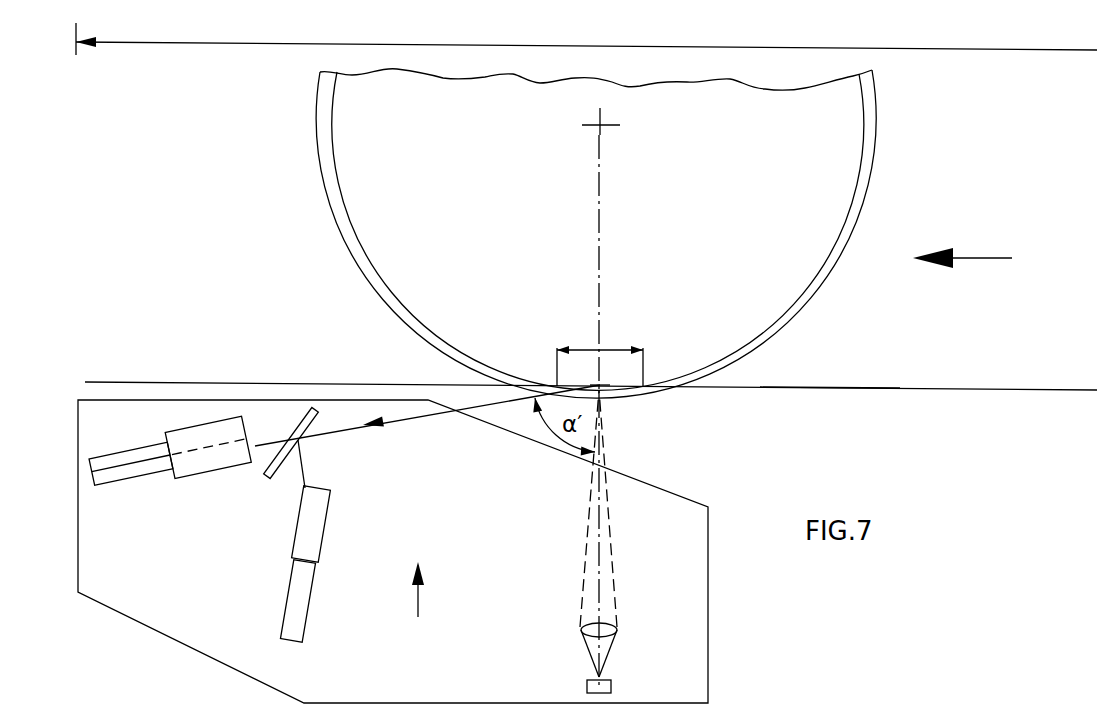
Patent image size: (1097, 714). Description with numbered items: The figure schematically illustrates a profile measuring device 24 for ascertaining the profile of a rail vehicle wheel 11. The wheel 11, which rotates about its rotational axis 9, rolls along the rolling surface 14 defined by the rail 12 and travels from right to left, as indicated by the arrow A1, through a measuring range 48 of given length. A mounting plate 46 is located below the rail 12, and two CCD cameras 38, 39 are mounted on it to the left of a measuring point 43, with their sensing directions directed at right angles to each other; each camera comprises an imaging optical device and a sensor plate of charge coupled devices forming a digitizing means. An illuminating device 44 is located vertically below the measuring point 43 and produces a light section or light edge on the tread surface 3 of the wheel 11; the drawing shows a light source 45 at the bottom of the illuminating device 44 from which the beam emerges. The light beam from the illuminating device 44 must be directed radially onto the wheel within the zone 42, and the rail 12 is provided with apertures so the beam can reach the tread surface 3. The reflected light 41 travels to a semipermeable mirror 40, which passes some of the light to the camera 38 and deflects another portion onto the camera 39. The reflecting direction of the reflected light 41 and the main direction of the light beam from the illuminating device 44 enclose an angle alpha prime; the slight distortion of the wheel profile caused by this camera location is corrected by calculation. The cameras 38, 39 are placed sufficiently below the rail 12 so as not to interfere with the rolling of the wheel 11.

The tread surface 3 is at (808, 293).
The rotational axis 9 is at (601, 127).
The wheel 11 is at (853, 128).
The rail 12 is at (853, 391).
The rolling surface 14 is at (996, 389).
The profile measuring device 24 is at (420, 604).
The CCD-camera 38 is at (125, 474).
The CCD-camera 39 is at (300, 519).
The semipermeable mirror 40 is at (296, 432).
The reflected light 41 is at (406, 421).
The zone 42 is at (613, 349).
The measuring point 43 is at (612, 403).
The illuminating device 44 is at (594, 535).
The light source 45 is at (576, 664).
The mounting plate 46 is at (708, 665).
The measuring range 48 is at (1036, 50).
The arrow indicating travel direction A1 is at (962, 250).